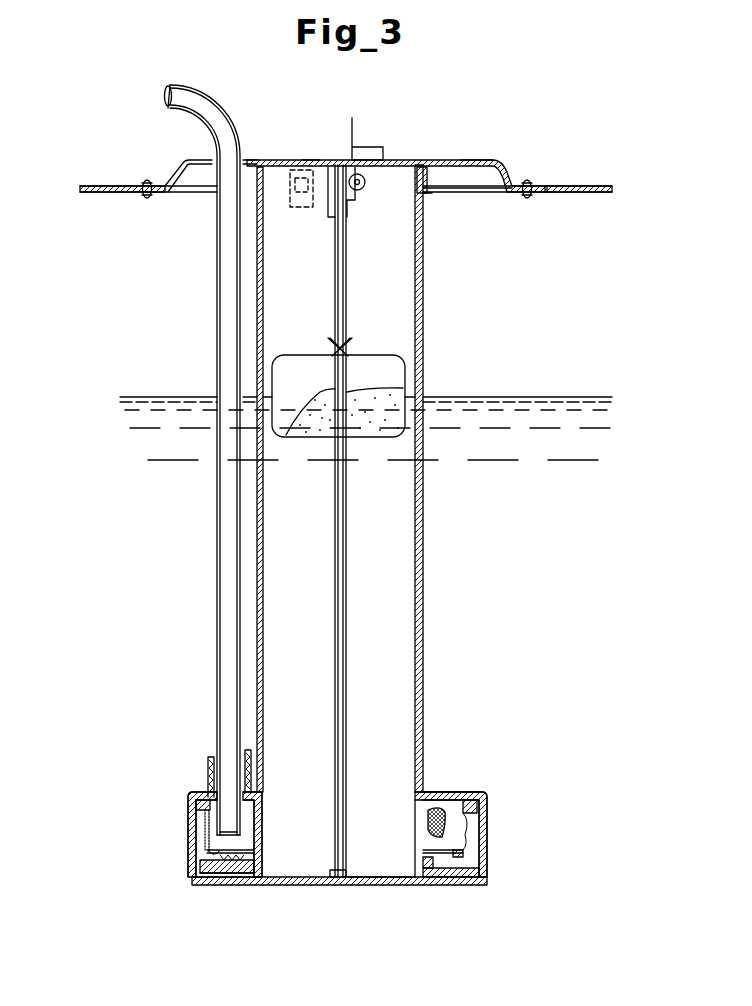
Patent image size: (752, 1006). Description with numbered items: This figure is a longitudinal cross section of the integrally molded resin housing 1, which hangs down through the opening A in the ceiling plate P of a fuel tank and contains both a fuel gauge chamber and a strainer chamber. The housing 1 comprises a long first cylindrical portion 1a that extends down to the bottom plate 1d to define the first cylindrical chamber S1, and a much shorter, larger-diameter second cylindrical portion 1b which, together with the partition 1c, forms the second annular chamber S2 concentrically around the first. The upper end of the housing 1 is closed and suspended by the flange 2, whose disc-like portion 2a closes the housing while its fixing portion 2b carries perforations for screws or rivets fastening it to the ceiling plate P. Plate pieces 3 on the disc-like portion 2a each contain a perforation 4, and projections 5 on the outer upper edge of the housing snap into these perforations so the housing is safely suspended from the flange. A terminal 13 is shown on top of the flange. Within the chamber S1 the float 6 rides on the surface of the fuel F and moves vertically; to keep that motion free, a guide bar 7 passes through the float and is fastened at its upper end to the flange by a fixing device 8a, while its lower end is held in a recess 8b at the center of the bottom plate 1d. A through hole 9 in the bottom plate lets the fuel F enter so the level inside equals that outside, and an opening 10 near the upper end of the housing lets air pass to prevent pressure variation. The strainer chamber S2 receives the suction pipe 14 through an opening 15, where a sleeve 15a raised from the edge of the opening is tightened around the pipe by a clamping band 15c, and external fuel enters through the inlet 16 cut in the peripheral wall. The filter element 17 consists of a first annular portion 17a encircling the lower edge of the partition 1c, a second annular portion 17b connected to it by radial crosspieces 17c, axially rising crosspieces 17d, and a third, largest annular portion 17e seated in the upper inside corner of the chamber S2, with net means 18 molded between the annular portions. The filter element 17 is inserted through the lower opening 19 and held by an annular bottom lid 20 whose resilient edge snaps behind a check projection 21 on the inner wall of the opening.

The housing unit 1 is at (339, 556).
The first cylindrical portion 1a is at (420, 645).
The second cylindrical portion 1b is at (452, 790).
The partition 1c is at (414, 813).
The bottom plate 1d is at (313, 886).
The flange member 2 is at (356, 153).
The disc-like portion 2a is at (465, 160).
The fixing portion 2b is at (527, 180).
The plate piece 3 is at (302, 160).
The perforation 4 is at (426, 186).
The projection 5 is at (430, 197).
The float 6 is at (392, 372).
The guide bar 7 is at (336, 758).
The fixing device 8a is at (330, 210).
The recess 8b is at (347, 874).
The through hole 9 is at (385, 886).
The opening 10 is at (413, 256).
The terminal 13 is at (352, 135).
The suction pipe 14 is at (228, 604).
The opening 15 is at (236, 749).
The sleeve 15a is at (213, 754).
The clamping band 15c is at (250, 762).
The inlet 16 is at (434, 854).
The filter element 17 is at (218, 862).
The first annular portion 17a is at (256, 866).
The second annular portion 17b is at (192, 880).
The crosspiece 17c is at (243, 851).
The crosspiece 17d is at (204, 822).
The third annular portion 17e is at (198, 803).
The net means 18 is at (208, 838).
The lower opening 19 is at (468, 882).
The bottom lid 20 is at (228, 875).
The check projection 21 is at (250, 882).
The opening A is at (205, 196).
The ceiling plate P is at (590, 185).
The fuel F is at (382, 503).
The first cylindrical chamber S1 is at (392, 558).
The second annular chamber S2 is at (472, 832).